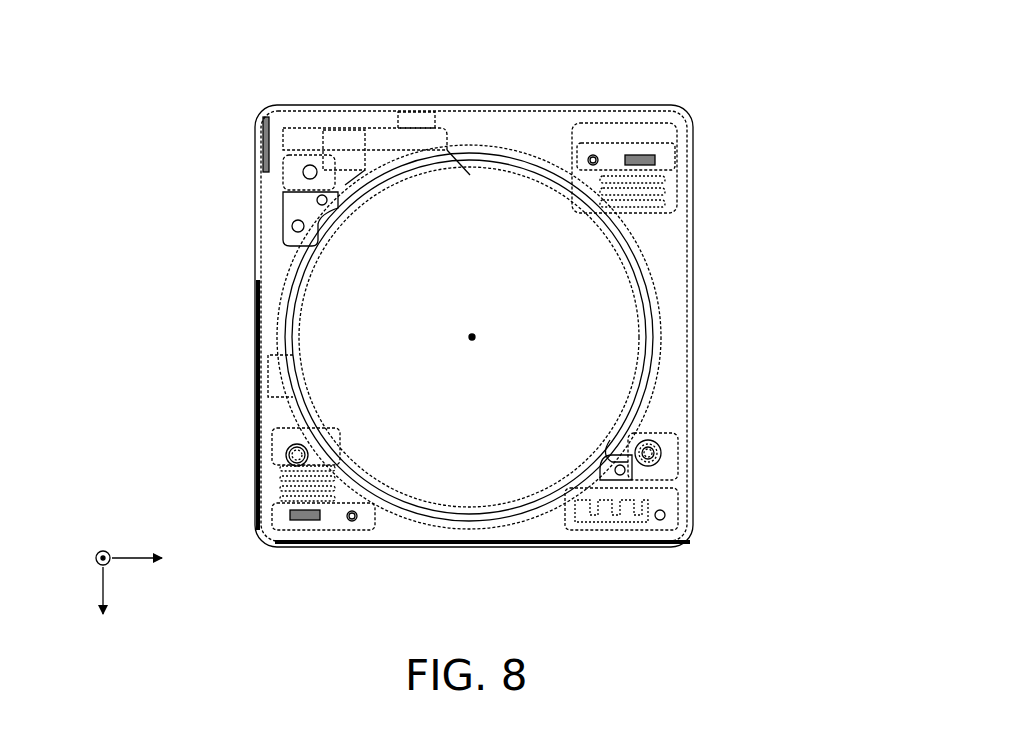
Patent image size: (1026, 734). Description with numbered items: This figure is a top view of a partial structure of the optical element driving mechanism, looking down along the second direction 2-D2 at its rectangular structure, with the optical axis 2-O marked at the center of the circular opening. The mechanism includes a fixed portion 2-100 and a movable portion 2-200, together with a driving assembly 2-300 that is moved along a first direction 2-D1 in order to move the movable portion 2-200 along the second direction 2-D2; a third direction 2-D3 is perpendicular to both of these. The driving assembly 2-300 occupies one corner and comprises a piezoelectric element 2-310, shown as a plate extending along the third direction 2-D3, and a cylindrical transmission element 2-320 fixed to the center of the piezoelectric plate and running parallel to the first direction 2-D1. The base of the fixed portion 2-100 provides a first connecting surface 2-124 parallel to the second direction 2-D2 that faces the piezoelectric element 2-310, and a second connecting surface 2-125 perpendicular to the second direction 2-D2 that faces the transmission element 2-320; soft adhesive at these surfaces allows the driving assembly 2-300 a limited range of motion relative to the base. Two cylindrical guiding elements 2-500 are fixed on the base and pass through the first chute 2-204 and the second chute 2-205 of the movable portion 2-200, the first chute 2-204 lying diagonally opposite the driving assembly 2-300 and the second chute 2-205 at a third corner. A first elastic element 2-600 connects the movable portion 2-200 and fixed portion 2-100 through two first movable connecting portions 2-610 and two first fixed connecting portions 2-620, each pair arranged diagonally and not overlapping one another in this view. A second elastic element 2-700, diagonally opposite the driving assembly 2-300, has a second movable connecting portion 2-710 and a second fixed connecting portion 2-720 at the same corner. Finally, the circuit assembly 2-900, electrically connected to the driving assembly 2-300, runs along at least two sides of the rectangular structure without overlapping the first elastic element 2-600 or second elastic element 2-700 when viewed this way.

The fixed portion 2-100 is at (694, 128).
The first connecting surface 2-124 is at (290, 128).
The second connecting surface 2-125 is at (420, 125).
The movable portion 2-200 is at (655, 440).
The first chute 2-204 is at (662, 448).
The second chute 2-205 is at (286, 452).
The driving assembly 2-300 is at (284, 172).
The piezoelectric element 2-310 is at (264, 125).
The transmission element 2-320 is at (305, 137).
The guiding element 2-500 is at (292, 460).
The first elastic element 2-600 is at (674, 163).
The first movable connecting portion 2-610 is at (310, 205).
The first fixed connecting portion 2-620 is at (612, 150).
The second elastic element 2-700 is at (625, 532).
The second movable connecting portion 2-710 is at (580, 522).
The second fixed connecting portion 2-720 is at (652, 520).
The circuit assembly 2-900 is at (257, 250).
The optical axis 2-O is at (500, 337).
The first direction 2-D1 is at (171, 559).
The second direction 2-D2 is at (65, 559).
The third direction 2-D3 is at (100, 609).